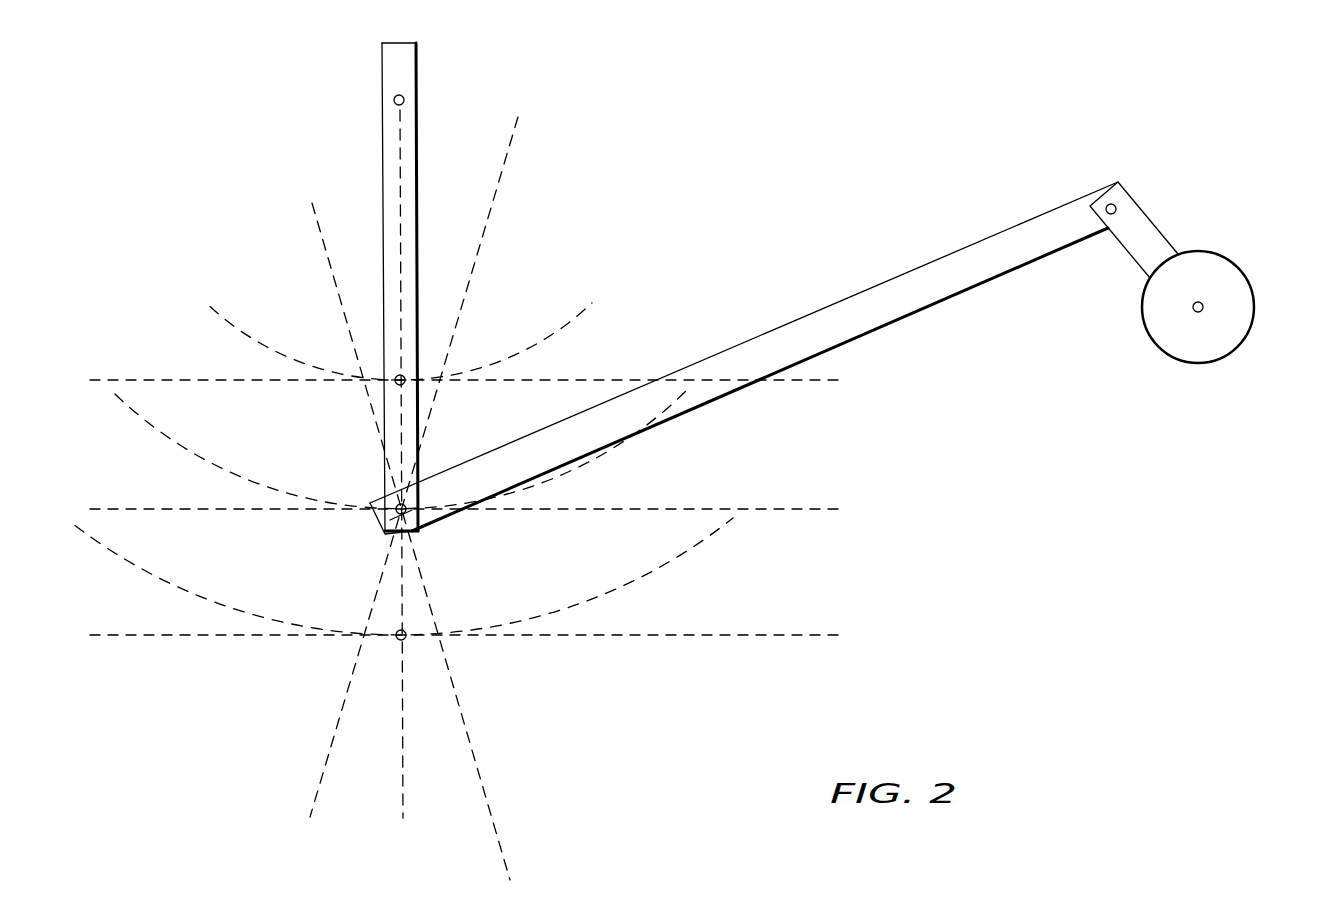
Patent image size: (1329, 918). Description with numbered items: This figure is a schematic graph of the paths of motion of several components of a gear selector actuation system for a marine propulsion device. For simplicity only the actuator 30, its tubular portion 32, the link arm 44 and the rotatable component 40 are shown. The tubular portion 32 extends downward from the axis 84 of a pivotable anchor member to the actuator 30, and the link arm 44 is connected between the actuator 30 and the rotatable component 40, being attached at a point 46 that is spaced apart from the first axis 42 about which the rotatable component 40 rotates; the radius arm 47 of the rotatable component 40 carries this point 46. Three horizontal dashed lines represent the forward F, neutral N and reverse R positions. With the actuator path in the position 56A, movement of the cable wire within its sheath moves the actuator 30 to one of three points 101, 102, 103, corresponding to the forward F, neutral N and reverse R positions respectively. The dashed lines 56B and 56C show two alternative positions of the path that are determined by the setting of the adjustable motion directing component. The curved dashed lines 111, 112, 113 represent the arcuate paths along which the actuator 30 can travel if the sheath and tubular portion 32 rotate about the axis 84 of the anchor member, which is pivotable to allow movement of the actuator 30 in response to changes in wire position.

The actuator 30 is at (425, 537).
The tubular portion 32 is at (390, 128).
The rotatable component 40 is at (1240, 286).
The first axis 42 is at (1203, 311).
The link arm 44 is at (856, 298).
The point 46 is at (1106, 207).
The radius arm 47 is at (1138, 222).
The path position 56A is at (430, 766).
The alternative path position 56B is at (327, 763).
The alternative path position 56C is at (487, 801).
The axis 84 is at (404, 100).
The forward position point 101 is at (397, 386).
The neutral position point 102 is at (384, 522).
The reverse position point 103 is at (403, 641).
The arcuate path 111 is at (518, 352).
The arcuate path 112 is at (587, 461).
The arcuate path 113 is at (637, 578).
The forward position F is at (110, 380).
The neutral position N is at (110, 509).
The reverse position R is at (110, 635).